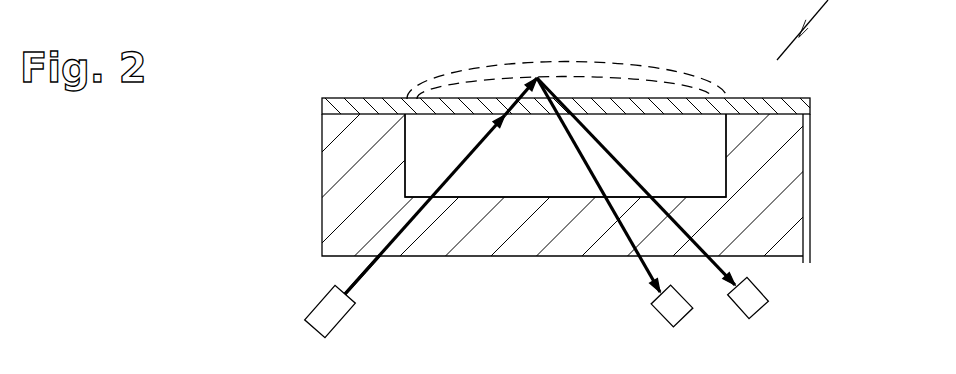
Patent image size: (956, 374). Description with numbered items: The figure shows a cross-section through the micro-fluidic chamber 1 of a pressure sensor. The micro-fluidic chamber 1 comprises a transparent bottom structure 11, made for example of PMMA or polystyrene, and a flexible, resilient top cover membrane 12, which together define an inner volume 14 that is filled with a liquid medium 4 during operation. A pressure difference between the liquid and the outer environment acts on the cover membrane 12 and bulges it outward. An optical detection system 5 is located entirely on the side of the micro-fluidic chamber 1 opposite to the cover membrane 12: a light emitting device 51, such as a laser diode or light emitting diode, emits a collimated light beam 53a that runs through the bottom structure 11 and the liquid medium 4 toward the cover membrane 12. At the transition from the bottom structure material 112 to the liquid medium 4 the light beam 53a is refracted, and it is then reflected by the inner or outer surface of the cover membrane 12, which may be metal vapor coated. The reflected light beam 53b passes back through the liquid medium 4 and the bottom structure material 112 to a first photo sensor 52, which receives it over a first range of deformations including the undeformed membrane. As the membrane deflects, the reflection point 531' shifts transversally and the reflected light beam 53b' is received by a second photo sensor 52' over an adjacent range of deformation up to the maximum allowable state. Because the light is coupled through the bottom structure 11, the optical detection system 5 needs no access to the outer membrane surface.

The micro-fluidic chamber 1 is at (585, 173).
The optical detection system 5 is at (554, 316).
The bottom structure 11 is at (670, 0).
The bottom structure material 112 is at (447, 222).
The top cover membrane 12 is at (653, 80).
The inner volume 14 is at (712, 159).
The liquid medium 4 is at (565, 155).
The light emitting device 51 is at (327, 311).
The photo sensor 52 is at (636, 329).
The second photo sensor 52' is at (711, 325).
The light beam 53a is at (441, 186).
The reflected light beam 53b is at (598, 185).
The reflected light beam 53b' is at (636, 181).
The reflection point 531' is at (402, 314).